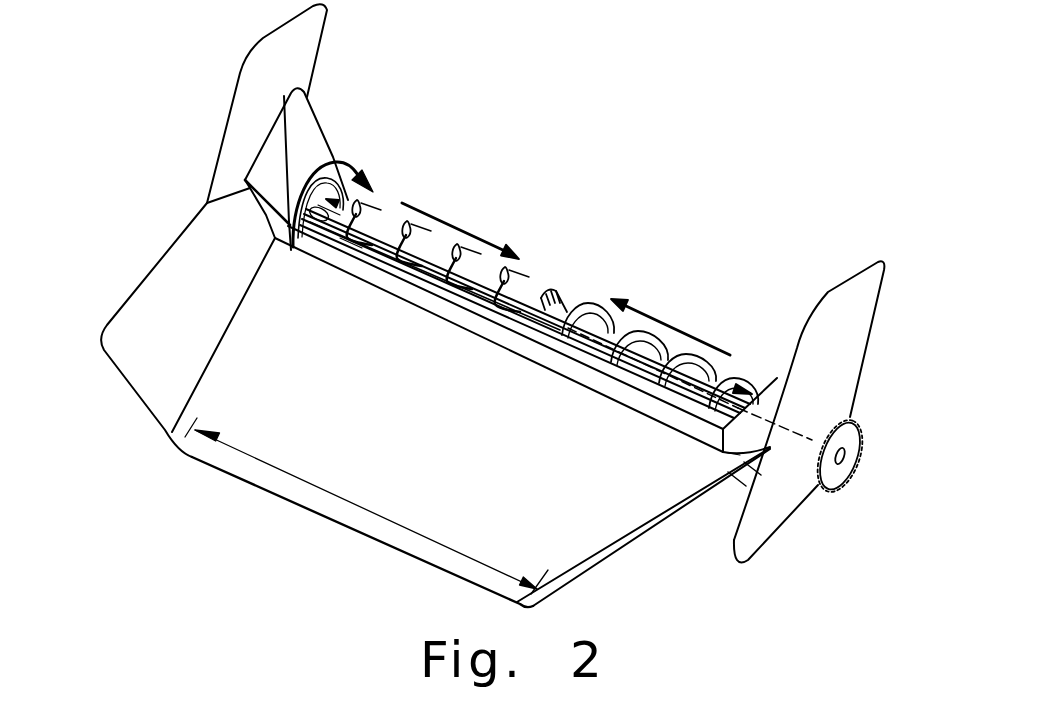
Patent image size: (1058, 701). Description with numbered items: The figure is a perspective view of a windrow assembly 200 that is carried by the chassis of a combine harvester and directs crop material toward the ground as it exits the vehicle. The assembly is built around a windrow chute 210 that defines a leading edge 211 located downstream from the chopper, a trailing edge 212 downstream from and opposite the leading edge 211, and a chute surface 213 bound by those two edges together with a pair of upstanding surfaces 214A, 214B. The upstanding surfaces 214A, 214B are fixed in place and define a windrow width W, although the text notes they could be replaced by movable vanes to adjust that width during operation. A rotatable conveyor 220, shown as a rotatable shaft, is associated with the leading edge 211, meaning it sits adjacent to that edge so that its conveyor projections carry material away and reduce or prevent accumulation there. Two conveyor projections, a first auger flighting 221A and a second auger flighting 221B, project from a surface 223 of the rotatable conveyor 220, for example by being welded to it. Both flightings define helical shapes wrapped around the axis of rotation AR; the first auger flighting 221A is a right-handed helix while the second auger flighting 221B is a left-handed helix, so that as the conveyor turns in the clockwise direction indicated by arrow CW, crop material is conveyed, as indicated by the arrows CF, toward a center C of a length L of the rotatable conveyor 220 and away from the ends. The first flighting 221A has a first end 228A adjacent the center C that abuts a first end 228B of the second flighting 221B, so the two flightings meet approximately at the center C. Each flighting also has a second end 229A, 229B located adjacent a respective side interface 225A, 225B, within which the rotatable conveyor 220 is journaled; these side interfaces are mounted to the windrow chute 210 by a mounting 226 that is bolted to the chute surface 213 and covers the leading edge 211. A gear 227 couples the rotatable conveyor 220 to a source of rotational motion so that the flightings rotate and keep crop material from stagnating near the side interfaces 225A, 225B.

The windrow assembly 200 is at (586, 141).
The windrow chute 210 is at (285, 509).
The leading edge 211 is at (403, 300).
The trailing edge 212 is at (227, 468).
The chute surface 213 is at (418, 442).
The upstanding surface 214A is at (200, 340).
The upstanding surface 214B is at (612, 553).
The rotatable conveyor 220 is at (521, 285).
The first auger flighting 221A is at (417, 240).
The second auger flighting 221B is at (580, 314).
The surface of the rotatable conveyor 223 is at (566, 304).
The side interface 225A is at (313, 140).
The side interface 225B is at (774, 377).
The mounting 226 is at (564, 372).
The gear 227 is at (840, 468).
The first end of the first flighting 228A is at (547, 300).
The first end of the second flighting 228B is at (572, 308).
The second end of the first flighting 229A is at (333, 195).
The second end of the second flighting 229B is at (697, 405).
The clockwise direction CW is at (310, 168).
The axis of rotation AR is at (384, 233).
The crop material conveyance CF is at (423, 230).
The center C is at (534, 316).
The length L is at (484, 262).
The windrow width W is at (366, 506).